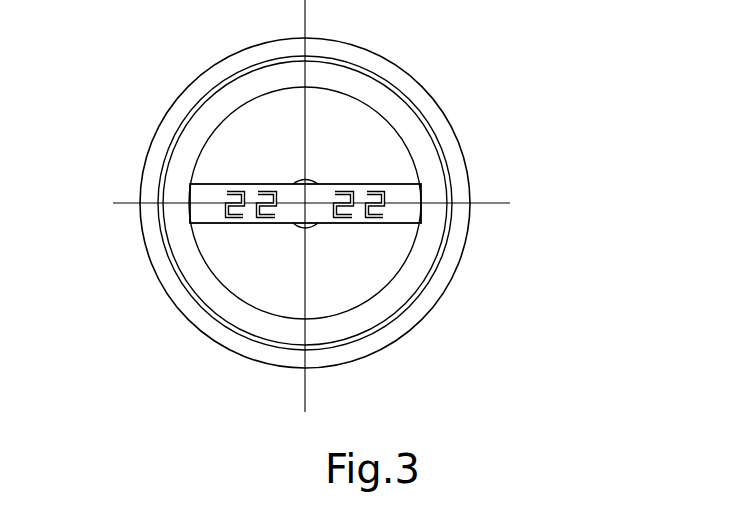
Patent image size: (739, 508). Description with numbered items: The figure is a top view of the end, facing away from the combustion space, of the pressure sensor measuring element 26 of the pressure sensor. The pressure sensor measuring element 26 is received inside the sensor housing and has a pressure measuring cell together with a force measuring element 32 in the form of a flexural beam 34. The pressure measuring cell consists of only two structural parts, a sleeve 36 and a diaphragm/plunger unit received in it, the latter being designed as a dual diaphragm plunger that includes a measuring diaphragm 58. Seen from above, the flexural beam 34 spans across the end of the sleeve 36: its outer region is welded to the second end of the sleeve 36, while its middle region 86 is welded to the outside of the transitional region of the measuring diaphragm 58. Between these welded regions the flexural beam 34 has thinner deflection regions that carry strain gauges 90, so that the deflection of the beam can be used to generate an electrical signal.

The pressure sensor measuring element 26 is at (164, 314).
The force measuring element 32 is at (331, 133).
The flexural beam 34 is at (241, 169).
The sleeve 36 is at (443, 278).
The measuring diaphragm 58 is at (328, 268).
The middle region 86 is at (297, 232).
The strain gauges 90 is at (383, 192).